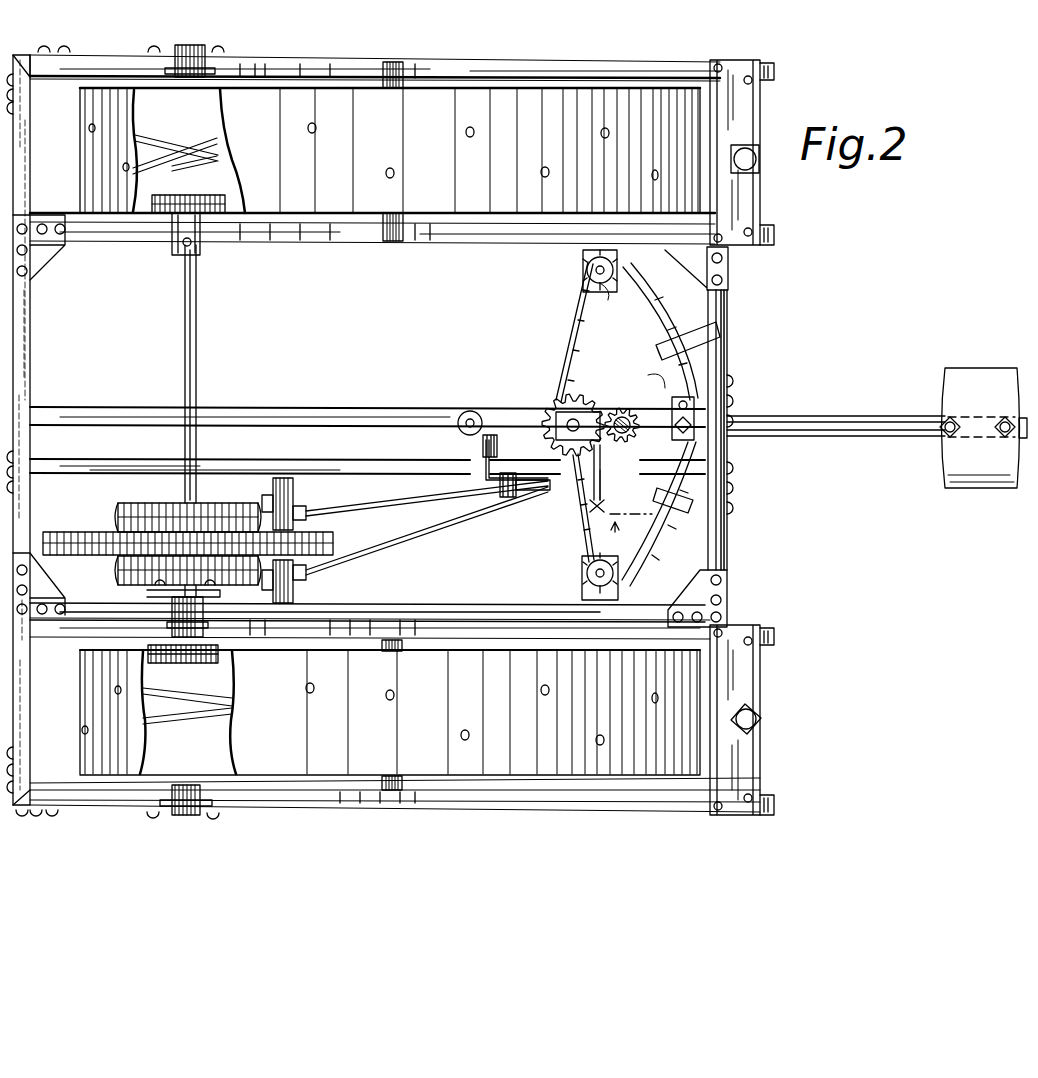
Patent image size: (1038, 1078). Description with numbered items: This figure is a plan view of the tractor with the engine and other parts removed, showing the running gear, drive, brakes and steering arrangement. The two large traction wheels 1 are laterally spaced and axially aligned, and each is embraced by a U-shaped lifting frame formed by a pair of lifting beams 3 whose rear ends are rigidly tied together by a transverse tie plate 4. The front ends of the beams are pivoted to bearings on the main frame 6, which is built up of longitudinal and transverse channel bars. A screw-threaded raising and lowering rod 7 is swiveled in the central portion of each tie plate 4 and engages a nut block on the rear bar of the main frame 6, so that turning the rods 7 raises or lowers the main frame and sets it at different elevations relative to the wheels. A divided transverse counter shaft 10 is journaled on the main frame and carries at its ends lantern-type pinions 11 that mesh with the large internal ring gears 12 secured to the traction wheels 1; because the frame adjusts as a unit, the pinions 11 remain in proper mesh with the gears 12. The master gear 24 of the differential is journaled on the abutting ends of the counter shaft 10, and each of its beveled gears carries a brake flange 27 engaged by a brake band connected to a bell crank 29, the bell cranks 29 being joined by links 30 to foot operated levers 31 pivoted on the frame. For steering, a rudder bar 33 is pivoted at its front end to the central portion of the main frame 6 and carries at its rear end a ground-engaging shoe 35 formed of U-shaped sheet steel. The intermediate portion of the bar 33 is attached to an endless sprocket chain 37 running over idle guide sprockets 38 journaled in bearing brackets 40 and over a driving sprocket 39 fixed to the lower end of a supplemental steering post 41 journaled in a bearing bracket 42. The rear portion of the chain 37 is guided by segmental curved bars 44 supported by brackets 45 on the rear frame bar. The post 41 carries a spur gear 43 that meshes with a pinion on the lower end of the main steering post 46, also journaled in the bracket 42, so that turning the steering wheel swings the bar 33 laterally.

The traction wheel 1 is at (425, 697).
The lifting beam 3 is at (284, 70).
The tie plate 4 is at (745, 115).
The main frame 6 is at (26, 378).
The raising and lowering rod 7 is at (750, 155).
The counter shaft 10 is at (190, 300).
The pinion 11 is at (220, 198).
The internal ring gear 12 is at (145, 213).
The master gear 24 is at (80, 533).
The brake flange 27 is at (203, 570).
The bell crank 29 is at (285, 575).
The link 30 is at (375, 545).
The foot operated lever 31 is at (500, 500).
The bar 33 is at (848, 425).
The ground-engaging means 35 is at (964, 382).
The endless chain 37 is at (572, 325).
The idle guide sprocket 38 is at (606, 285).
The driving sprocket 39 is at (575, 500).
The bearing bracket 40 is at (585, 258).
The supplemental steering post 41 is at (545, 440).
The bearing bracket 42 is at (608, 500).
The spur gear 43 is at (548, 408).
The segmental curved bar 44 is at (660, 305).
The bracket 45 is at (700, 340).
The main steering post 46 is at (630, 418).